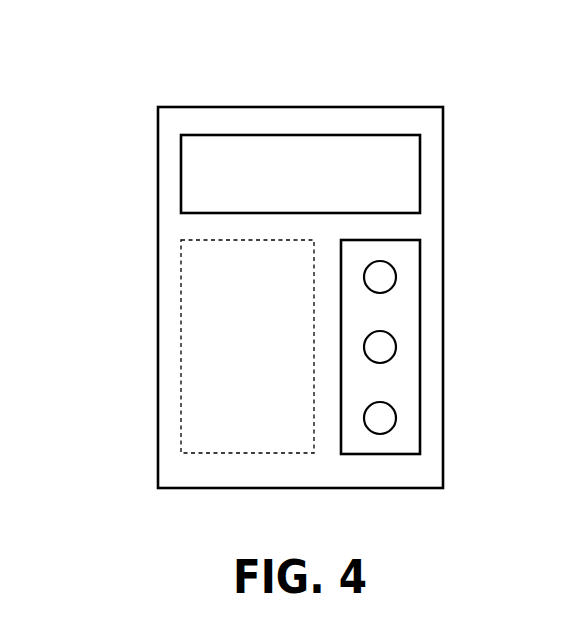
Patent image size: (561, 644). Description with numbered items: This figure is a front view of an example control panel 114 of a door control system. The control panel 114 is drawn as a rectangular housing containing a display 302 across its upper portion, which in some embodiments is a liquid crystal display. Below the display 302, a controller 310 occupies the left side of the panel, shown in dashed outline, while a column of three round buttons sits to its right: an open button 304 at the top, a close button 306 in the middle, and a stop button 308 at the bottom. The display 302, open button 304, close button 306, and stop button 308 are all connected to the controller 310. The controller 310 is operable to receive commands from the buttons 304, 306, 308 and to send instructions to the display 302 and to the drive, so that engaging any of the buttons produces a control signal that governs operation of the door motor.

The control panel 114 is at (299, 107).
The display 302 is at (182, 170).
The controller 310 is at (182, 330).
The open button 304 is at (397, 275).
The close button 306 is at (397, 346).
The stop button 308 is at (397, 417).